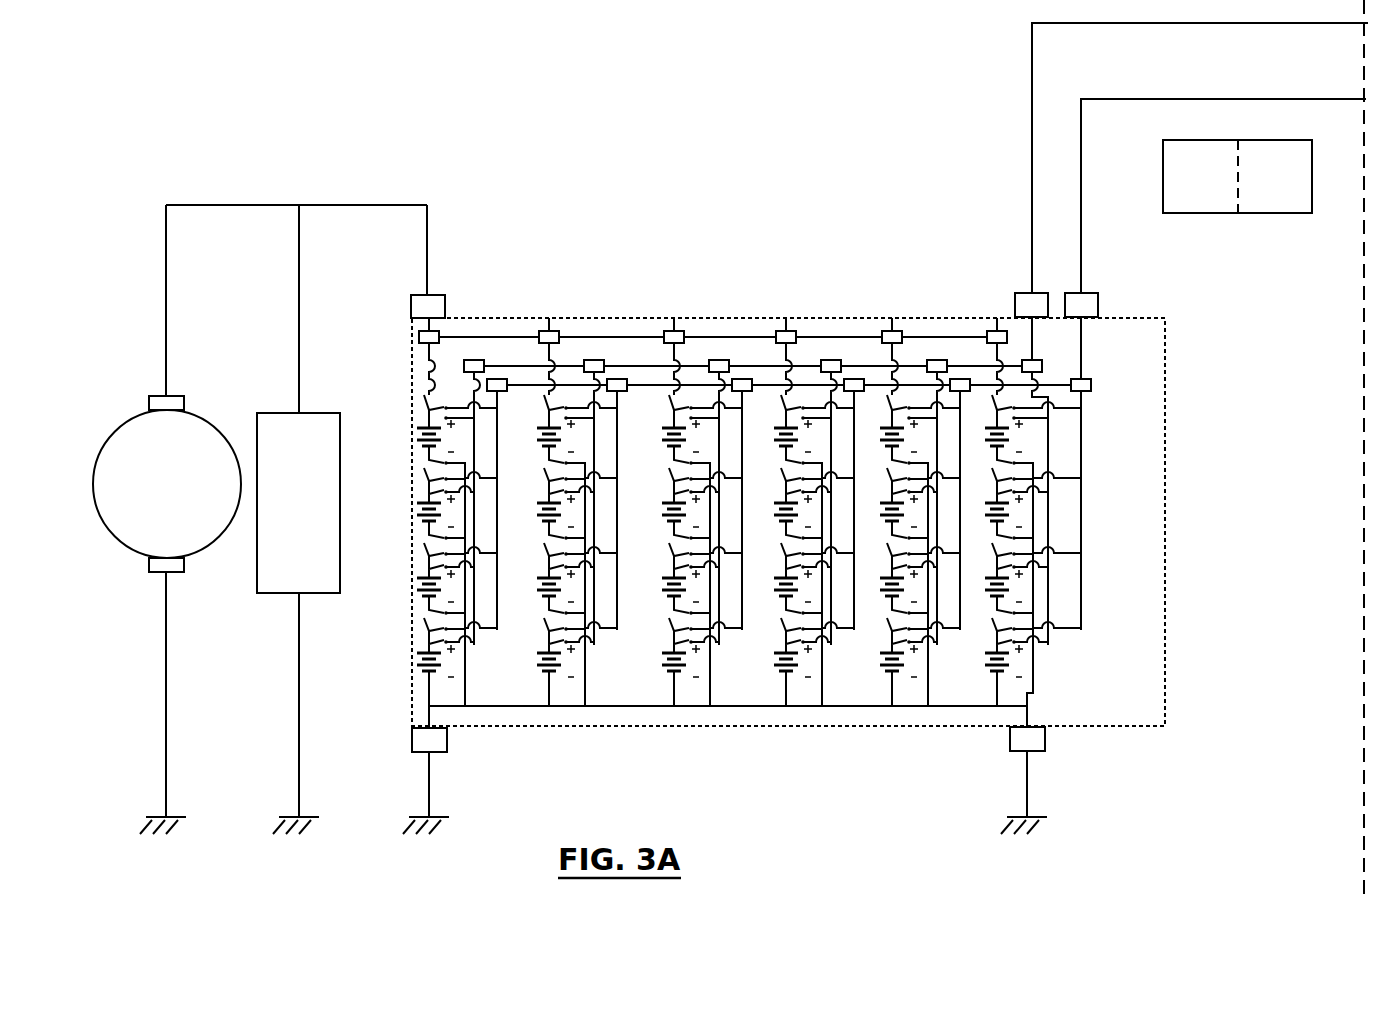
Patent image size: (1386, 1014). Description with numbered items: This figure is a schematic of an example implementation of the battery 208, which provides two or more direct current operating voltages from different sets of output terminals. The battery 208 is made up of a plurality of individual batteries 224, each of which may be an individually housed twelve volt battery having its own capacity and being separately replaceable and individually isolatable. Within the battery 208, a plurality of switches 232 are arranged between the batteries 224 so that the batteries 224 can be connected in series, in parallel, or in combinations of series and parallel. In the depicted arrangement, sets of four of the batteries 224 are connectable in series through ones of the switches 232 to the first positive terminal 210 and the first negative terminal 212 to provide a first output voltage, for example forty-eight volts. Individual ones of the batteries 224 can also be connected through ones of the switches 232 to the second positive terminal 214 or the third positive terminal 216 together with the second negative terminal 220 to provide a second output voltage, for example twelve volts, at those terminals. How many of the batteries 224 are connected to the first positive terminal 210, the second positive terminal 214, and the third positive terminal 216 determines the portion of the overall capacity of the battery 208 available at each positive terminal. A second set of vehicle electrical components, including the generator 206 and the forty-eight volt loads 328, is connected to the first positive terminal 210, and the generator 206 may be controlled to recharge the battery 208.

The generator 206 is at (112, 425).
The battery 208 is at (728, 318).
The first positive terminal 210 is at (442, 293).
The first negative terminal 212 is at (448, 745).
The second positive terminal 214 is at (1024, 293).
The third positive terminal 216 is at (1098, 318).
The second negative terminal 220 is at (1046, 740).
The batteries 224 is at (403, 433).
The switches 232 is at (408, 402).
The 48 V loads 328 is at (290, 413).